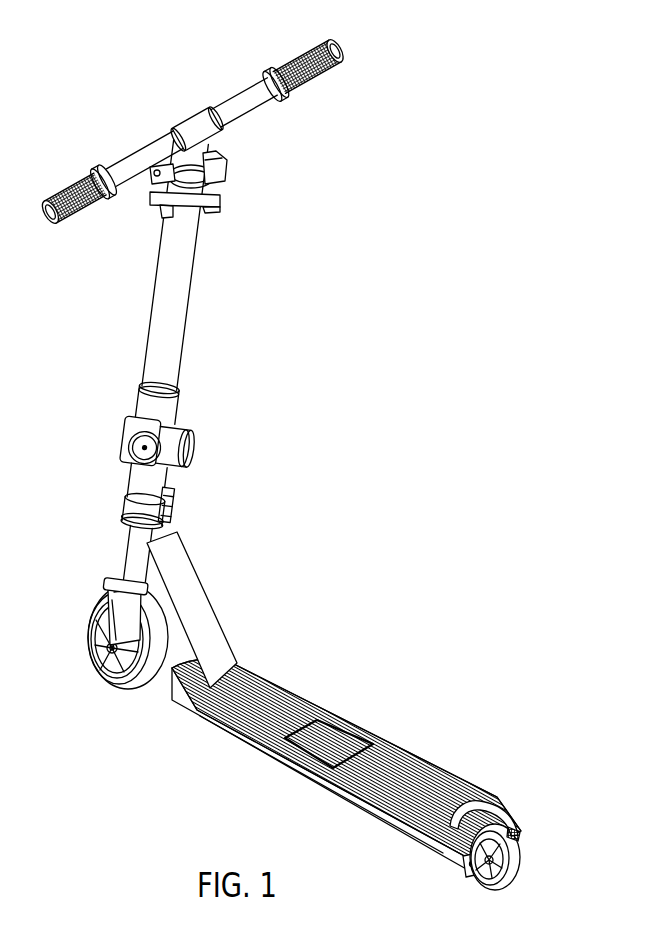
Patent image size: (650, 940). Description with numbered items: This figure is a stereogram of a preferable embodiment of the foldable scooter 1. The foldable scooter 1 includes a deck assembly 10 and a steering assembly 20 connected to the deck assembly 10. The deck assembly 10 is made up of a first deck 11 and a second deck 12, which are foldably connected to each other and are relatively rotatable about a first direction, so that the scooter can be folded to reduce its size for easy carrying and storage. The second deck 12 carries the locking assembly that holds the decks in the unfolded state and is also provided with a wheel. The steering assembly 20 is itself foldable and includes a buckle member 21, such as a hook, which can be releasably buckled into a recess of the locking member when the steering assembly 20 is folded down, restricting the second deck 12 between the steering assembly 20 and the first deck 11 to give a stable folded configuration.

The foldable scooter 1 is at (118, 112).
The deck assembly 10 is at (346, 737).
The first deck 11 is at (367, 740).
The second deck 12 is at (395, 767).
The steering assembly 20 is at (193, 402).
The buckle member 21 is at (227, 188).